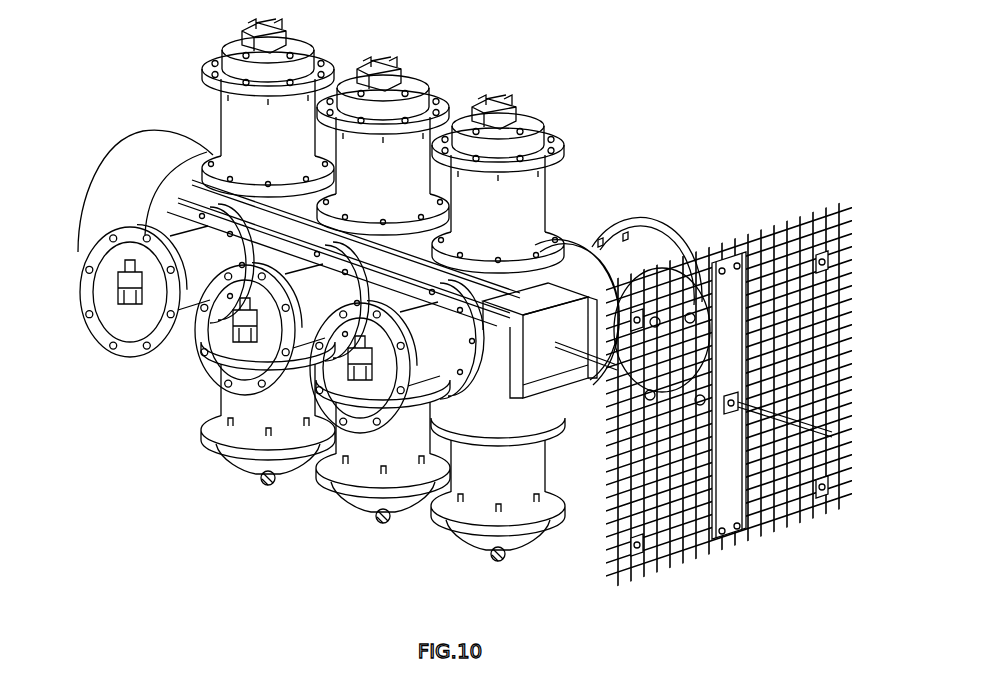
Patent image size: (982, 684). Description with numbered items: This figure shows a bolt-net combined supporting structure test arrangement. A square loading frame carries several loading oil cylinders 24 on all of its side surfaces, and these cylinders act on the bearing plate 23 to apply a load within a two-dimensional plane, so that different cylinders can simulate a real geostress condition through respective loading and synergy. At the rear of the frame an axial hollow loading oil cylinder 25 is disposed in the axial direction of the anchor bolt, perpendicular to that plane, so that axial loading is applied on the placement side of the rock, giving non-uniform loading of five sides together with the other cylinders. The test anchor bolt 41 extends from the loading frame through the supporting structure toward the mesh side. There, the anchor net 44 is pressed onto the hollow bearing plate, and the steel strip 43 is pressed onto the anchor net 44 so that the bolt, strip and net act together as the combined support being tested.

The bearing plate 23 is at (500, 358).
The loading oil cylinder 24 is at (410, 84).
The axial hollow loading oil cylinder 25 is at (102, 180).
The test anchor bolt 41 is at (836, 430).
The steel strip 43 is at (723, 250).
The anchor net 44 is at (845, 218).